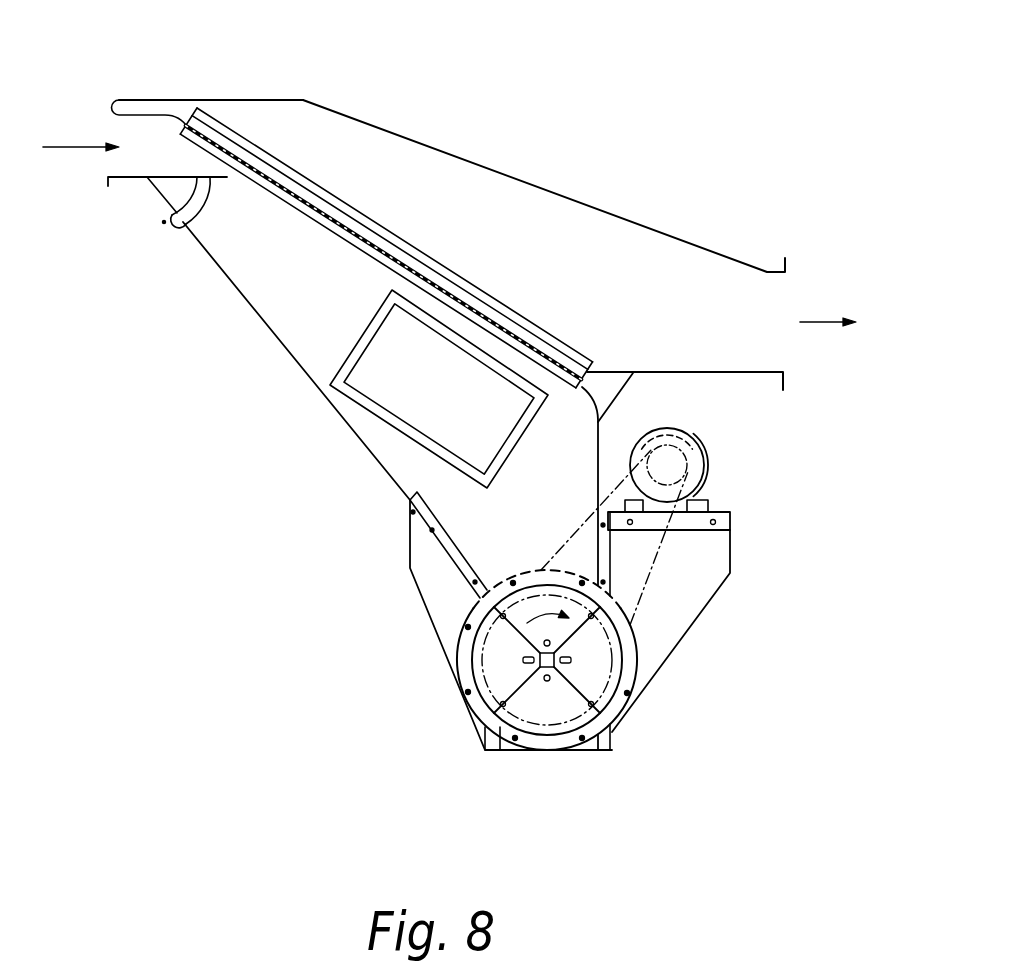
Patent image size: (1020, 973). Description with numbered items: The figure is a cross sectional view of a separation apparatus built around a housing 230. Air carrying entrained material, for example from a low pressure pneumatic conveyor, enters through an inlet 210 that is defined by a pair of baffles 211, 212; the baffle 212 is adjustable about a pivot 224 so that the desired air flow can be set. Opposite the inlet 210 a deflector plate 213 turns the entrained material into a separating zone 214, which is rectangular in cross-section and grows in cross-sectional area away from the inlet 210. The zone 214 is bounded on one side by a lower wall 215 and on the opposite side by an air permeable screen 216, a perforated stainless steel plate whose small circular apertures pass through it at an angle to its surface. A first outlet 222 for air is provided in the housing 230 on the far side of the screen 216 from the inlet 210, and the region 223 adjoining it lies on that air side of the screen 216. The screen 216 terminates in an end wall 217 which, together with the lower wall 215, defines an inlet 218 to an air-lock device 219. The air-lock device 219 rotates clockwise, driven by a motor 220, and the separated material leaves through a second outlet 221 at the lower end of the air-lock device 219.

The inlet 210 is at (113, 160).
The baffle 211 is at (137, 113).
The baffle 212 is at (141, 177).
The deflector plate 213 is at (217, 140).
The separating zone 214 is at (320, 296).
The lower wall 215 is at (306, 372).
The air permeable screen 216 is at (372, 243).
The end wall 217 is at (602, 437).
The inlet to air-lock device 218 is at (543, 590).
The air-lock device 219 is at (585, 668).
The motor 220 is at (697, 467).
The second outlet 221 is at (517, 755).
The first outlet 222 is at (796, 338).
The outlet duct 223 is at (669, 318).
The pivot 224 is at (147, 178).
The housing 230 is at (368, 485).